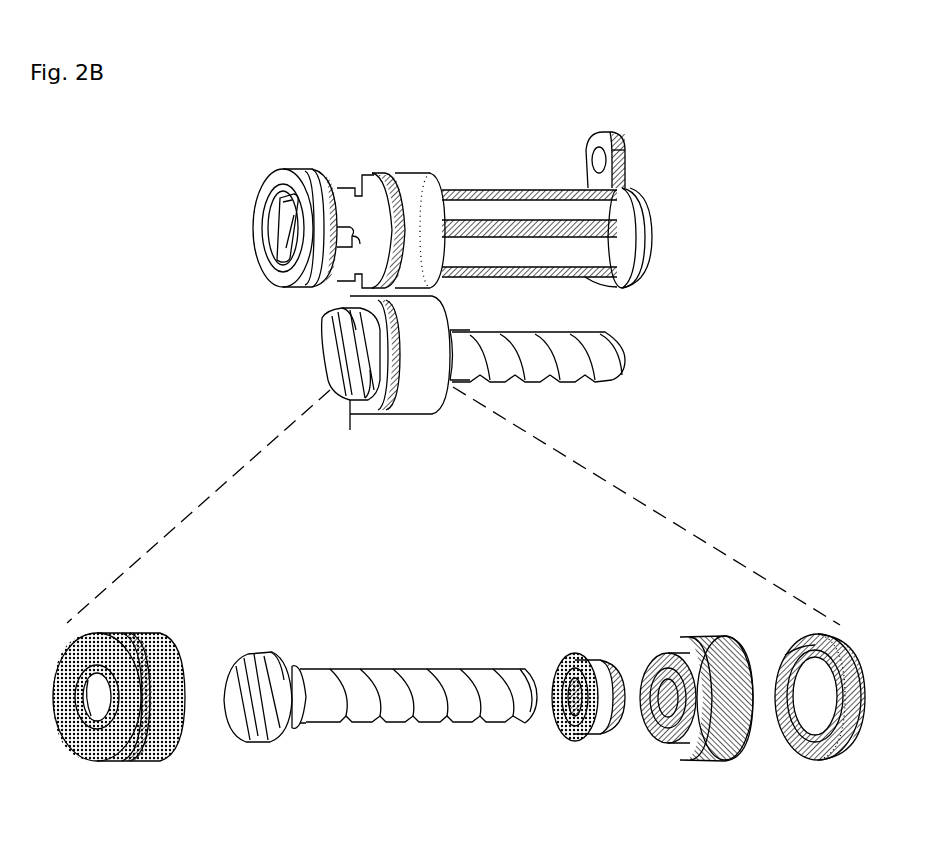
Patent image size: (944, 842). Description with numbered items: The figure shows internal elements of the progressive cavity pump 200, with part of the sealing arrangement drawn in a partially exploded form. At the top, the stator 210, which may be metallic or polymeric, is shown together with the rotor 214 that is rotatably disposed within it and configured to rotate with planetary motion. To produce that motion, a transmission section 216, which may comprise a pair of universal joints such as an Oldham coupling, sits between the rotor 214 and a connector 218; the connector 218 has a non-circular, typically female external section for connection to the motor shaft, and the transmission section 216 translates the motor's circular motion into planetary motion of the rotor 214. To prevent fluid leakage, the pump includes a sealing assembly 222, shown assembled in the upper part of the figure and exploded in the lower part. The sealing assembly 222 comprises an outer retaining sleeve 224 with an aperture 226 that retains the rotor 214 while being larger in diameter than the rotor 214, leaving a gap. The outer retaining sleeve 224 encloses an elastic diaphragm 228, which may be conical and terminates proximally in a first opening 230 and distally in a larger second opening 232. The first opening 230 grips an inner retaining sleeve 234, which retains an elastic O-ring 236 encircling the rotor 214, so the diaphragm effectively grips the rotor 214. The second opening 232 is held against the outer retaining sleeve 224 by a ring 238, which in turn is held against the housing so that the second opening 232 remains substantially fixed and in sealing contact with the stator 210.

The progressive cavity pump 200 is at (822, 94).
The stator 210 is at (555, 200).
The rotor 214 is at (615, 375).
The transmission section 216 is at (308, 304).
The connector 218 is at (262, 282).
The sealing assembly 222 is at (415, 400).
The outer retaining sleeve 224 is at (436, 312).
The aperture 226 is at (74, 760).
The elastic diaphragm 228 is at (690, 642).
The first opening 230 is at (678, 748).
The second opening 232 is at (752, 737).
The inner retaining sleeve 234 is at (598, 750).
The O-ring 236 is at (300, 748).
The ring 238 is at (458, 315).